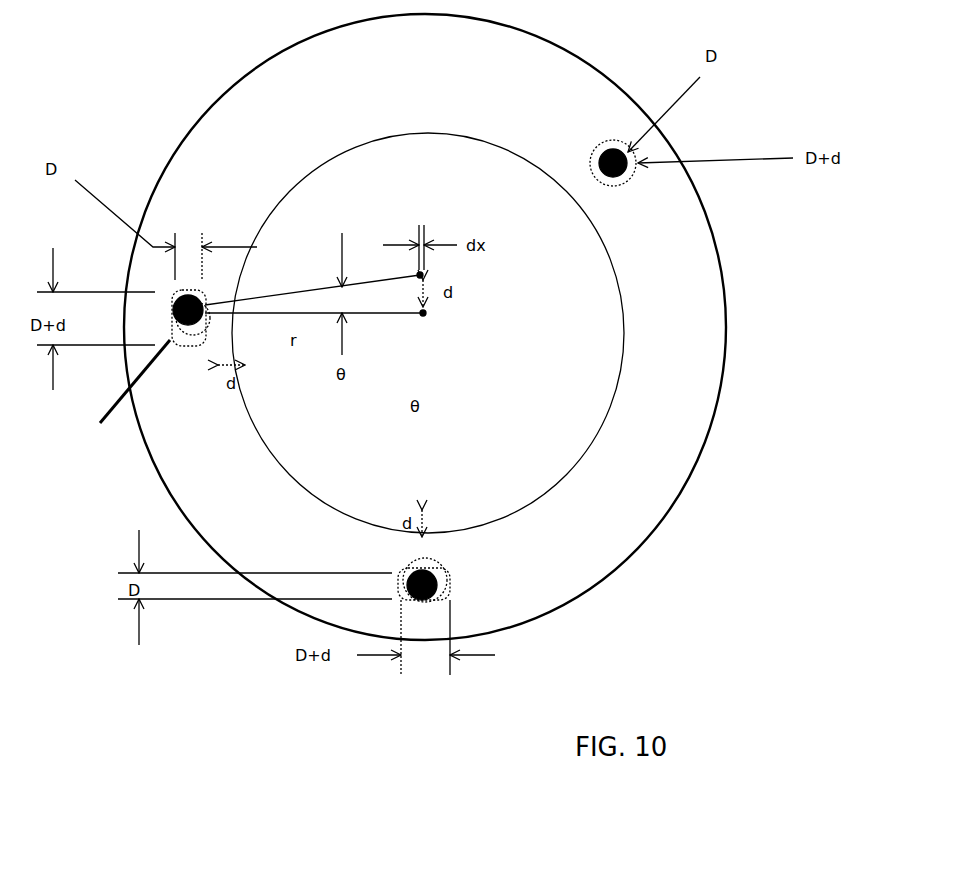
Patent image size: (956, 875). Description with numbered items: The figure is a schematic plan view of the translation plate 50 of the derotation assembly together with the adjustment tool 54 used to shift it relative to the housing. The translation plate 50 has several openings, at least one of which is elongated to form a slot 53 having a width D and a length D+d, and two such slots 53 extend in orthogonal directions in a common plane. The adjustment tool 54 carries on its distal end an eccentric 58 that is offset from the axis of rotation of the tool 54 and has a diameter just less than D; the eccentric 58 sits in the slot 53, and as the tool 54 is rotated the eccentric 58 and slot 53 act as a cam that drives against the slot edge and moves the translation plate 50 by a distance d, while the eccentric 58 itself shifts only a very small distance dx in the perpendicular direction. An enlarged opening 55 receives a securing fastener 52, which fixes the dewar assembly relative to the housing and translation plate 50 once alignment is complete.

The translation plate 50 is at (207, 103).
The fastener 52 is at (614, 150).
The slot 53 is at (119, 390).
The adjustment tool 54 is at (168, 318).
The opening 55 is at (630, 180).
The eccentric 58 is at (175, 297).